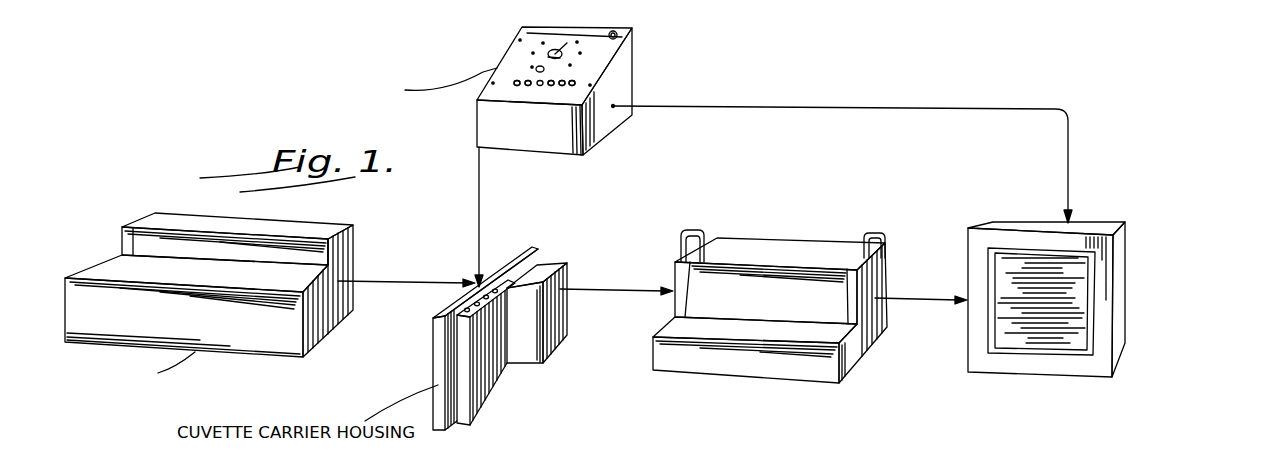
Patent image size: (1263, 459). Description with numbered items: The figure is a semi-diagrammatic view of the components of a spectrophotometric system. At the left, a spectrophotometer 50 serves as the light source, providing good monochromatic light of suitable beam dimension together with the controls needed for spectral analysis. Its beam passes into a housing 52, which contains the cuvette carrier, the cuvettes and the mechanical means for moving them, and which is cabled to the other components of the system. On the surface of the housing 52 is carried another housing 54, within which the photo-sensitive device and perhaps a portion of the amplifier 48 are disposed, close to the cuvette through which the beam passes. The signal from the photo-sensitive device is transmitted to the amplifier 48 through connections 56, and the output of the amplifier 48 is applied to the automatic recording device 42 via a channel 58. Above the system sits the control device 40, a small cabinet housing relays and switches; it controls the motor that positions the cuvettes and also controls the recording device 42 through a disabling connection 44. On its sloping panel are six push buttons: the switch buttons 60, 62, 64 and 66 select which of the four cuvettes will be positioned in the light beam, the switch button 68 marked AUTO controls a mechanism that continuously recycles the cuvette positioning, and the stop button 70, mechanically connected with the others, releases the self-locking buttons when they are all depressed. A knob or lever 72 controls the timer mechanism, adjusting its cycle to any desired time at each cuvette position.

The control device 40 is at (497, 68).
The automatic recording device 42 is at (1122, 297).
The disabling connection 44 is at (830, 107).
The amplifier 48 is at (787, 238).
The spectrophotometer 50 is at (215, 352).
The housing 52 is at (437, 357).
The housing 54 is at (557, 320).
The connections 56 is at (620, 288).
The channel 58 is at (925, 297).
The switch button 60 is at (518, 86).
The switch button 62 is at (530, 86).
The switch button 64 is at (553, 86).
The switch button 66 is at (563, 86).
The switch button 68 is at (576, 83).
The stop button 70 is at (513, 86).
The knob or lever 72 is at (547, 57).